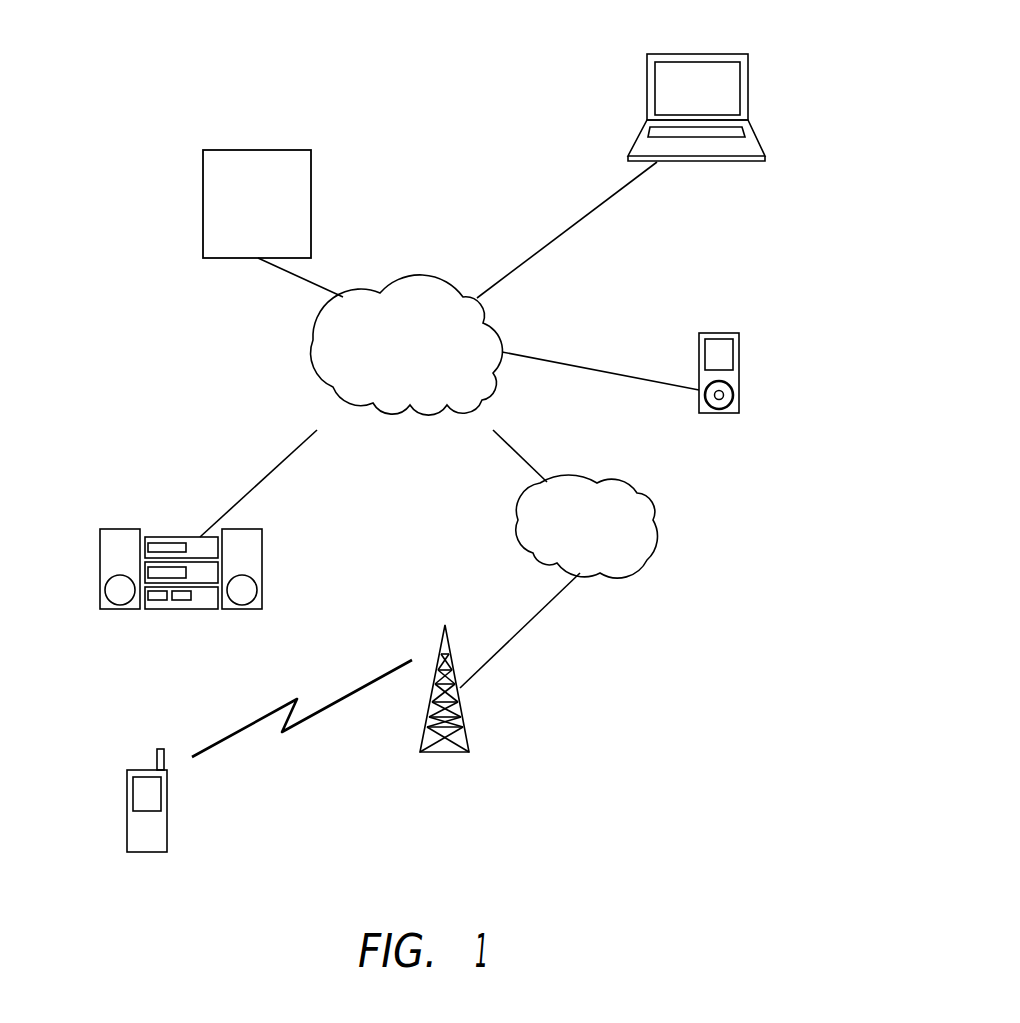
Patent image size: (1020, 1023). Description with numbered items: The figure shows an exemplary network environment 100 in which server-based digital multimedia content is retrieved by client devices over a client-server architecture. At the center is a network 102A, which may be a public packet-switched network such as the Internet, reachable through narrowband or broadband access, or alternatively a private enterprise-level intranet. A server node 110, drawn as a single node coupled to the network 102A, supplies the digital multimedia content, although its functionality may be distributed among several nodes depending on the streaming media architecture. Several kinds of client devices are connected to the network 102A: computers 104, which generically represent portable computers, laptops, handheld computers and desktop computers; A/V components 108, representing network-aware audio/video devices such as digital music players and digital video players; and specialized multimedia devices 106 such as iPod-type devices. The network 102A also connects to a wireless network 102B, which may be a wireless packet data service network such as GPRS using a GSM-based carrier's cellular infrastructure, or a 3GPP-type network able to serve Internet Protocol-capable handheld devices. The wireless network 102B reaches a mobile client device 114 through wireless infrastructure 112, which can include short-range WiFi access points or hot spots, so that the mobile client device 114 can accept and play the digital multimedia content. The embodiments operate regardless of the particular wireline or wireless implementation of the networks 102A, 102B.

The network environment 100 is at (697, 772).
The network 102A is at (313, 340).
The wireless network 102B is at (647, 560).
The computers 104 is at (705, 54).
The specialized multimedia devices 106 is at (720, 333).
The A/V components 108 is at (165, 537).
The server node 110 is at (277, 234).
The wireless infrastructure 112 is at (447, 753).
The mobile client device 114 is at (127, 800).